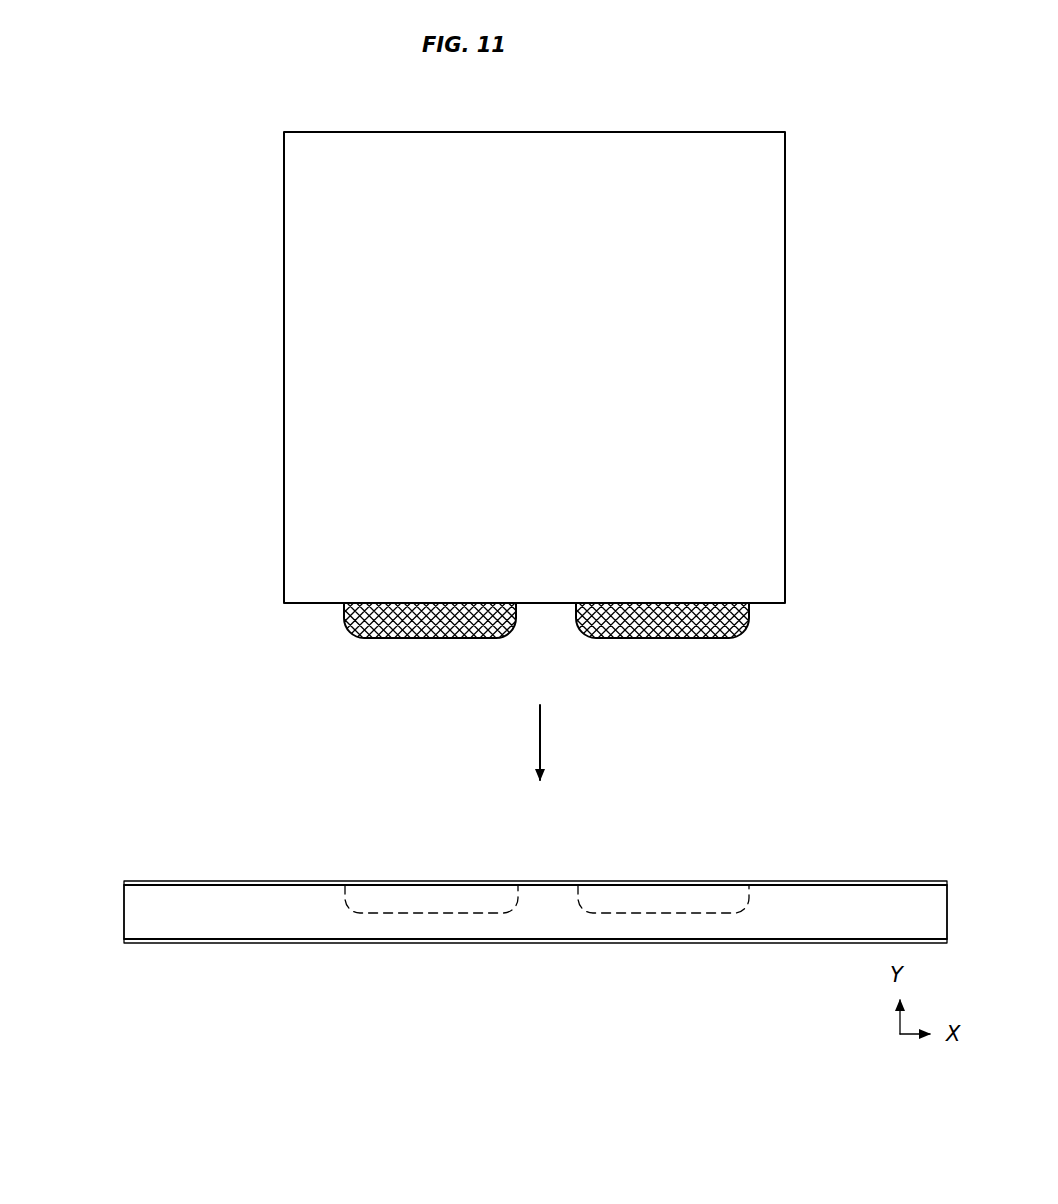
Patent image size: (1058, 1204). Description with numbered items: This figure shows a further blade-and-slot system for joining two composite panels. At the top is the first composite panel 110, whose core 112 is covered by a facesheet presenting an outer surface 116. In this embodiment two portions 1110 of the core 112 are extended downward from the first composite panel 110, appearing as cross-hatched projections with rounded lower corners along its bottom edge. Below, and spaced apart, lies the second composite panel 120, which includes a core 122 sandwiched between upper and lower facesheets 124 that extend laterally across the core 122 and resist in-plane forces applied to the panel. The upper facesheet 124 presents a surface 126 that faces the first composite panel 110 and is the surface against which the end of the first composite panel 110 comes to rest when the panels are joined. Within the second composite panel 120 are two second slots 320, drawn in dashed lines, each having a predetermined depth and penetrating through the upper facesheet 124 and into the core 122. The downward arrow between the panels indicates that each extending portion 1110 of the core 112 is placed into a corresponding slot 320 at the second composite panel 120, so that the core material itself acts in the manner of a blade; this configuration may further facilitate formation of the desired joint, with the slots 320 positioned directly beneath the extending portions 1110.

The first composite panel 110 is at (836, 443).
The core 112 is at (413, 639).
The surface 116 is at (564, 384).
The portion of core 1110 is at (318, 654).
The second composite panel 120 is at (106, 792).
The core 122 is at (100, 885).
The facesheets 124 is at (132, 880).
The surface 126 is at (194, 874).
The second slot 320 is at (358, 907).